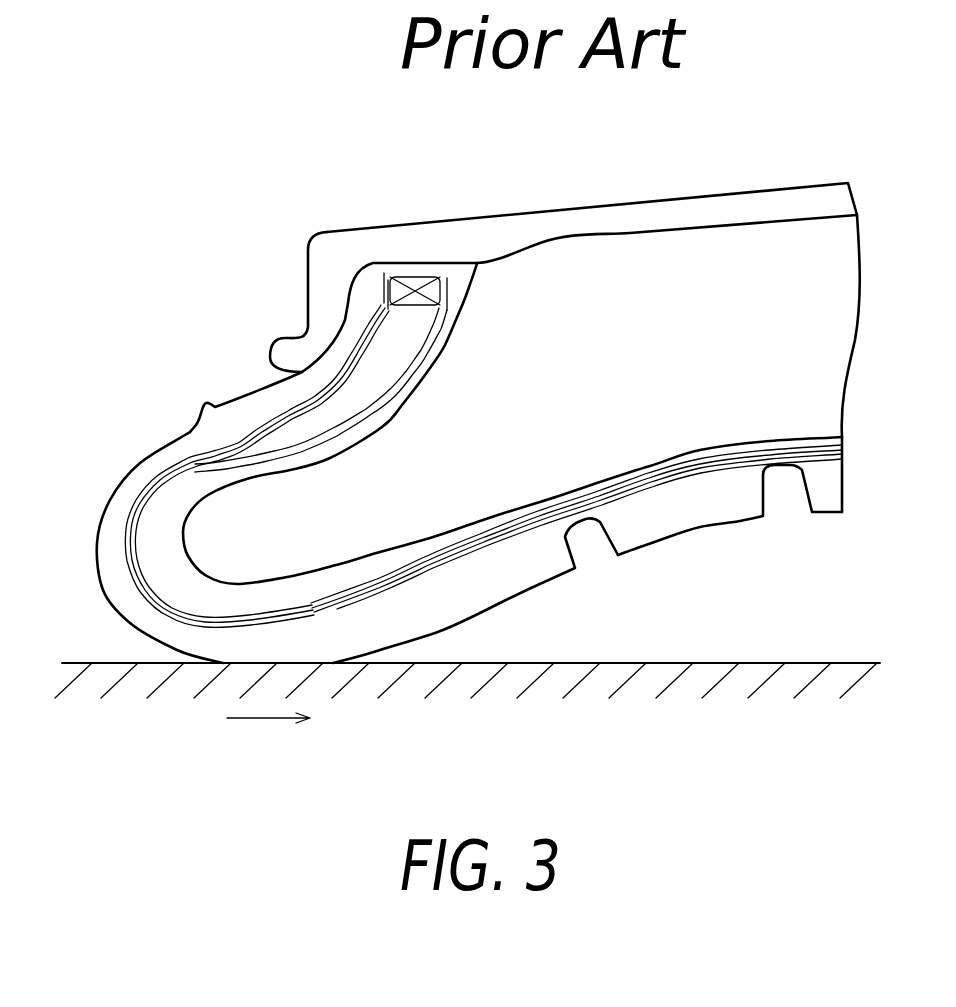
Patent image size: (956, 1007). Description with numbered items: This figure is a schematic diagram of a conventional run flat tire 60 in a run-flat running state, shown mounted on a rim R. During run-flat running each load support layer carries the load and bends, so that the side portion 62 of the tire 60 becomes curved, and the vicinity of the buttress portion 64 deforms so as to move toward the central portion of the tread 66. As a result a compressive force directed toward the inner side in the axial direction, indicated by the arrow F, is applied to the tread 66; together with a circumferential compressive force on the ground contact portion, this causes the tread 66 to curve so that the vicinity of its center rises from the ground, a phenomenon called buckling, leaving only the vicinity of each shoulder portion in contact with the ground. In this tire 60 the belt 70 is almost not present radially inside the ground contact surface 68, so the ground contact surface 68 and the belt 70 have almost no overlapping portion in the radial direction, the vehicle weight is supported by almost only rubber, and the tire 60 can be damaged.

The run flat tire 60 is at (297, 165).
The rim R is at (495, 232).
The side portion 62 is at (188, 370).
The buttress portion 64 is at (93, 483).
The tread 66 is at (510, 593).
The ground contact surface 68 is at (290, 663).
The belt 70 is at (380, 586).
The compressive force F is at (268, 735).